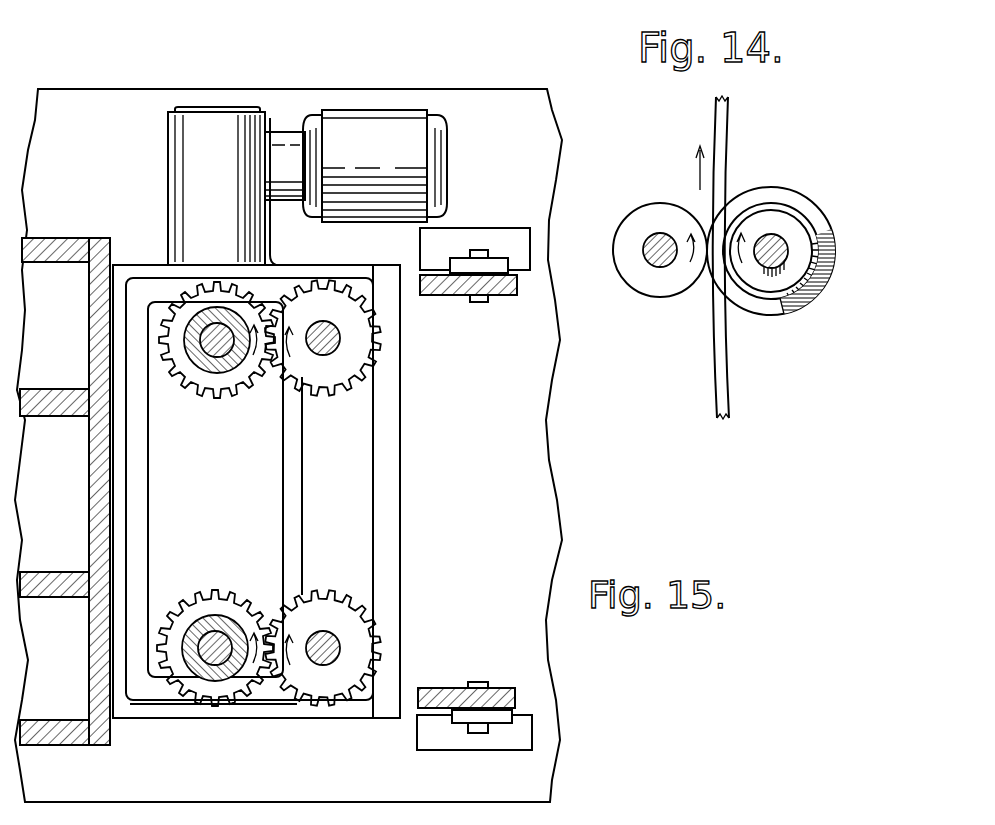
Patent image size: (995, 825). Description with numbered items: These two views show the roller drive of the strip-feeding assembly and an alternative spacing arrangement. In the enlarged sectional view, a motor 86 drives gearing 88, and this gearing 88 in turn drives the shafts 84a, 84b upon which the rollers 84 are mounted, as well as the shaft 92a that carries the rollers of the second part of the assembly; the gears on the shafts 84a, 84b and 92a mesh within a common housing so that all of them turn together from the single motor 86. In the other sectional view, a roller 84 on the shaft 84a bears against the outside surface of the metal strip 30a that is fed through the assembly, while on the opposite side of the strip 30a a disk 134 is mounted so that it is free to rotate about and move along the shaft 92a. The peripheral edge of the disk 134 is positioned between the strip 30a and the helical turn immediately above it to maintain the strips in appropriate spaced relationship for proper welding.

In FIG. 15, the gearing 88 is at (200, 122).
In FIG. 15, the motor 86 is at (350, 122).
In FIG. 15, the shaft 84b is at (210, 340).
In FIG. 15, the shaft 84a is at (207, 640).
In FIG. 14, the shaft 84a is at (655, 262).
In FIG. 15, the shaft 92a is at (317, 630).
In FIG. 14, the shaft 92a is at (779, 236).
In FIG. 14, the roller 84 is at (638, 212).
In FIG. 14, the disk 134 is at (784, 312).
In FIG. 14, the metal strip 30a is at (721, 384).